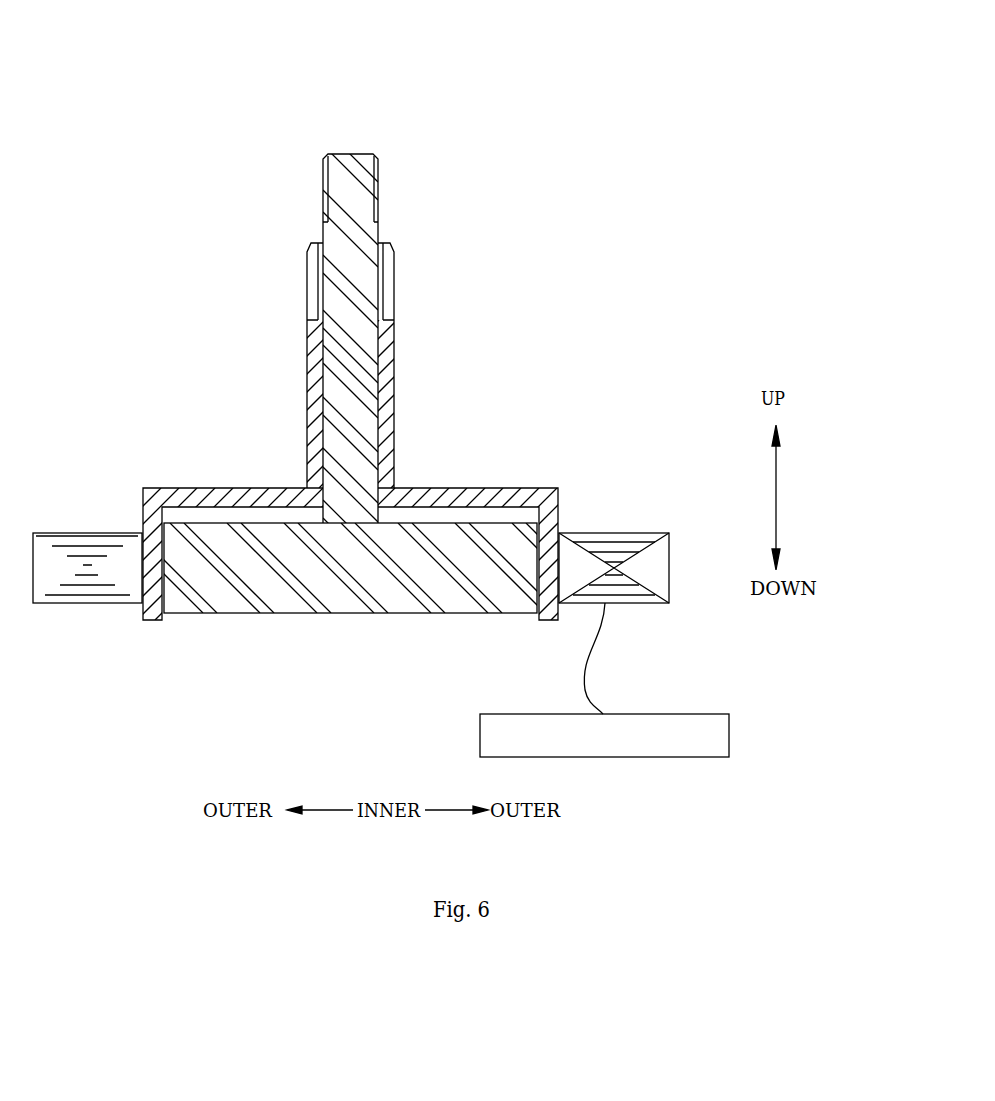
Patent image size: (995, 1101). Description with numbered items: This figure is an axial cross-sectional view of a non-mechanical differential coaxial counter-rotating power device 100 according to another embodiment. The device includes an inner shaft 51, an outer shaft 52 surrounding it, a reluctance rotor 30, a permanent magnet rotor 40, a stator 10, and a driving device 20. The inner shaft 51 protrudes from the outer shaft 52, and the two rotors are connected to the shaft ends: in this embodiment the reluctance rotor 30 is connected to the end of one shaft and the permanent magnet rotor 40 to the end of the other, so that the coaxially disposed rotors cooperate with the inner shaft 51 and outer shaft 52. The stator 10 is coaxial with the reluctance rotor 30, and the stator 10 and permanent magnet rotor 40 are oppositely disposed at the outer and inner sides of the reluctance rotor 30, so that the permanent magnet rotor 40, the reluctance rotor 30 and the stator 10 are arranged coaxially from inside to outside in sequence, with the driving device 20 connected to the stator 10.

The non-mechanical differential coaxial counter-rotating power device 100 is at (312, 50).
The inner shaft 51 is at (358, 213).
The outer shaft 52 is at (395, 323).
The permanent magnet rotor 40 is at (457, 523).
The reluctance rotor 30 is at (557, 488).
The stator 10 is at (635, 538).
The driving device 20 is at (713, 731).